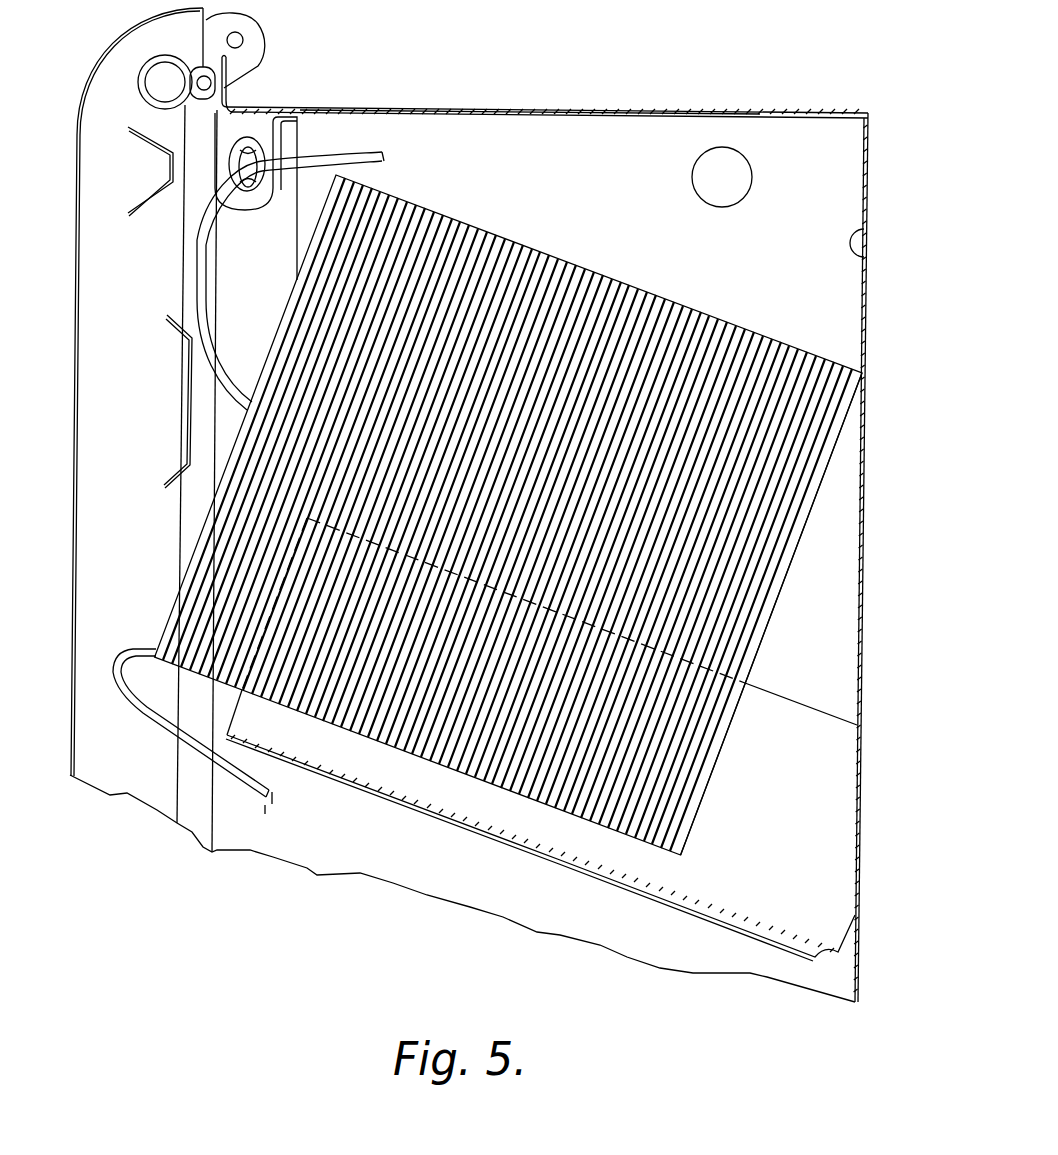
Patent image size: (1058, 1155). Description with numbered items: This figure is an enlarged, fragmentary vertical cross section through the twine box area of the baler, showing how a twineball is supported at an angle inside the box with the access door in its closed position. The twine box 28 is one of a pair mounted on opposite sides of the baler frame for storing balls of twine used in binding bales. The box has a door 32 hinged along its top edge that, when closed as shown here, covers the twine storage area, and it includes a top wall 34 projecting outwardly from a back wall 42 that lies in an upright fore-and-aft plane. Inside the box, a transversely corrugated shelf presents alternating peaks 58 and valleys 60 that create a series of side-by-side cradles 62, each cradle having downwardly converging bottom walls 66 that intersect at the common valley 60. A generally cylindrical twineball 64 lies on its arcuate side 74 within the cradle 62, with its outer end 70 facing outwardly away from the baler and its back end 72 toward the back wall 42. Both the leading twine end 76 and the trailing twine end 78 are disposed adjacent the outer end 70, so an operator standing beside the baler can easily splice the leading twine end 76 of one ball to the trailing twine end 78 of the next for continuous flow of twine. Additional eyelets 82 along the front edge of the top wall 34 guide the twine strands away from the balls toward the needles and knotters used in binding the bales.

The twine box 28 is at (538, 108).
The door 32 is at (78, 212).
The top wall 34 is at (722, 114).
The back wall 42 is at (866, 262).
The peak 58 is at (760, 686).
The valley 60 is at (727, 917).
The cradle 62 is at (559, 866).
The twineball 64 is at (508, 515).
The bottom wall 66 is at (570, 739).
The outer end 70 is at (195, 557).
The back end 72 is at (772, 600).
The arcuate side 74 is at (538, 302).
The leading twine end 76 is at (386, 163).
The trailing twine end 78 is at (243, 788).
The eyelet 82 is at (245, 122).